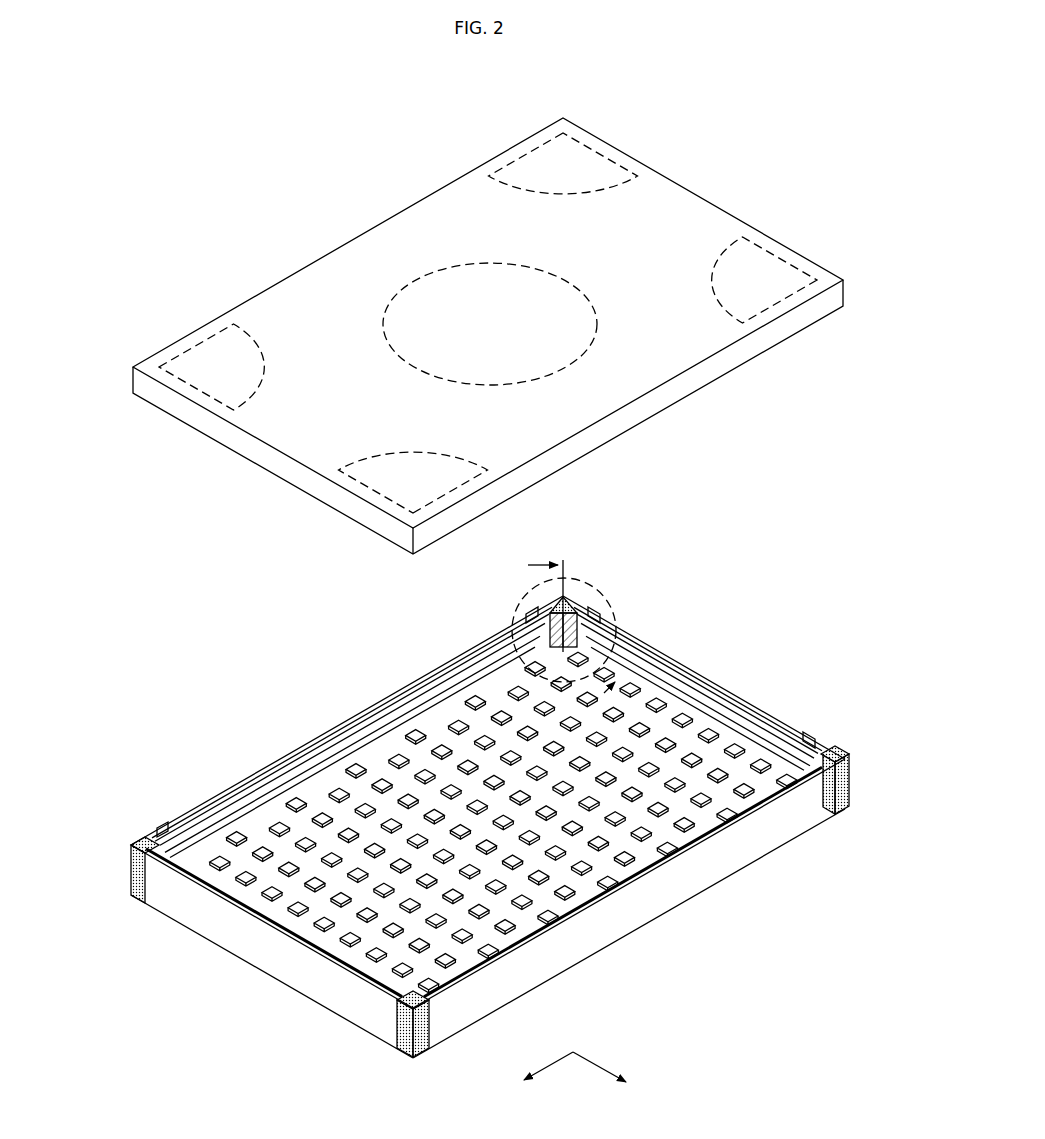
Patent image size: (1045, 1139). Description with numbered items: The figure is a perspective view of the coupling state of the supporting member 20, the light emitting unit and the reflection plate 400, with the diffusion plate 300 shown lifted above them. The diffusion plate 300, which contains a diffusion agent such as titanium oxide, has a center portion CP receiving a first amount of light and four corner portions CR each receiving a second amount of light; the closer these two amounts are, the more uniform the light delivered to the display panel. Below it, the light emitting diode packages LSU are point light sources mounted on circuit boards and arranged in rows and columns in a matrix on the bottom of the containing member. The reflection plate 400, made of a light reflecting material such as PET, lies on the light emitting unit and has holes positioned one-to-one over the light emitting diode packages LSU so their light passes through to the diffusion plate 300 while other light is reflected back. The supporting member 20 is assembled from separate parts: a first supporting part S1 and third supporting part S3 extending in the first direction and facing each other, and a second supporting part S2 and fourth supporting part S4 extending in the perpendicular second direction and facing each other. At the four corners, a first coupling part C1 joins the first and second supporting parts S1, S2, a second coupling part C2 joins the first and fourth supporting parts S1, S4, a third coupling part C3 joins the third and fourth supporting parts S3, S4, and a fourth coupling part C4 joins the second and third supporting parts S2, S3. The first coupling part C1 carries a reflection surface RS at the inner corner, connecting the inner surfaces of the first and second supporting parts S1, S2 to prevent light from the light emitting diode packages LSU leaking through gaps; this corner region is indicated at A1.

The diffusion plate 300 is at (694, 212).
The center portion CP is at (435, 265).
The corner portions CR is at (597, 150).
The supporting member 20 is at (486, 820).
The first supporting part S1 is at (345, 717).
The second supporting part S2 is at (800, 720).
The third supporting part S3 is at (625, 930).
The fourth supporting part S4 is at (298, 975).
The light emitting diode packages LSU is at (745, 745).
The reflection surface RS is at (498, 645).
The reflection plate 400 is at (657, 728).
The first coupling part C1 is at (572, 600).
The second coupling part C2 is at (128, 880).
The third coupling part C3 is at (413, 1058).
The fourth coupling part C4 is at (850, 785).
The corner area A1 is at (605, 597).